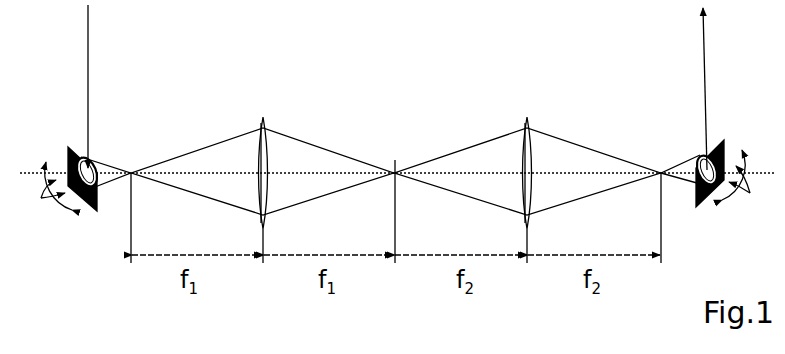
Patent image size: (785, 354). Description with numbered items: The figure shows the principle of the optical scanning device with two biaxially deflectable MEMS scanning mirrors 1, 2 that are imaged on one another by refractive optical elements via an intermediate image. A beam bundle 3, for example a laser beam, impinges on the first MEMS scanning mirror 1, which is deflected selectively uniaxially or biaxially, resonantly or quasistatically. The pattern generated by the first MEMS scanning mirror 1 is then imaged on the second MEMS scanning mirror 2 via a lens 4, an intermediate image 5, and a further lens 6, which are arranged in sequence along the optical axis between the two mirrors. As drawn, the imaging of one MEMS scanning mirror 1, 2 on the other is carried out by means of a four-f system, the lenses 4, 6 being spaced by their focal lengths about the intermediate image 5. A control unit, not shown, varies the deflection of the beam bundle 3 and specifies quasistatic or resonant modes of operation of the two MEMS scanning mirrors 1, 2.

The first MEMS scanning mirror 1 is at (68, 147).
The second MEMS scanning mirror 2 is at (716, 140).
The beam bundle 3 is at (88, 93).
The lens 4 is at (264, 118).
The intermediate image 5 is at (395, 160).
The lens 6 is at (528, 118).